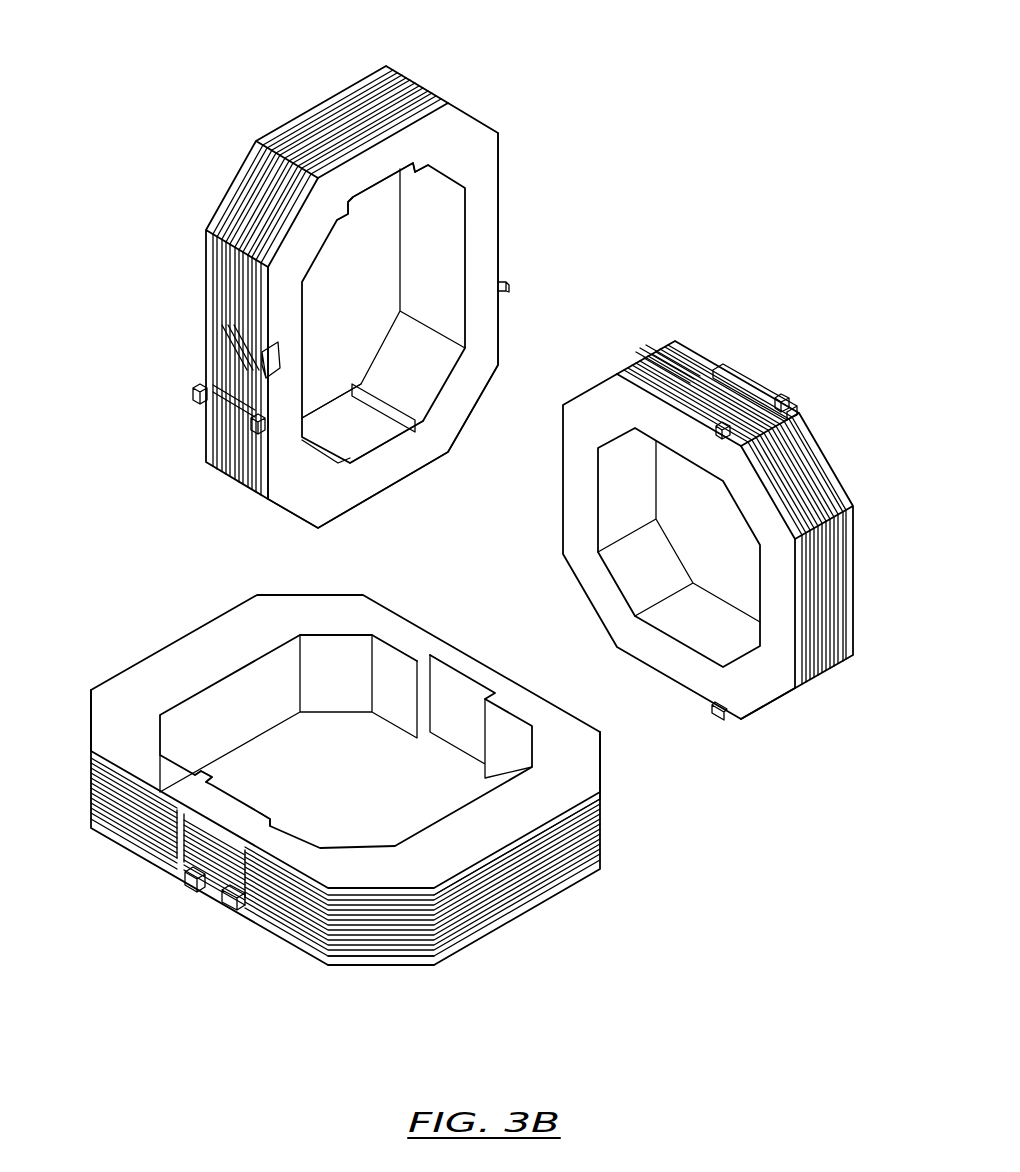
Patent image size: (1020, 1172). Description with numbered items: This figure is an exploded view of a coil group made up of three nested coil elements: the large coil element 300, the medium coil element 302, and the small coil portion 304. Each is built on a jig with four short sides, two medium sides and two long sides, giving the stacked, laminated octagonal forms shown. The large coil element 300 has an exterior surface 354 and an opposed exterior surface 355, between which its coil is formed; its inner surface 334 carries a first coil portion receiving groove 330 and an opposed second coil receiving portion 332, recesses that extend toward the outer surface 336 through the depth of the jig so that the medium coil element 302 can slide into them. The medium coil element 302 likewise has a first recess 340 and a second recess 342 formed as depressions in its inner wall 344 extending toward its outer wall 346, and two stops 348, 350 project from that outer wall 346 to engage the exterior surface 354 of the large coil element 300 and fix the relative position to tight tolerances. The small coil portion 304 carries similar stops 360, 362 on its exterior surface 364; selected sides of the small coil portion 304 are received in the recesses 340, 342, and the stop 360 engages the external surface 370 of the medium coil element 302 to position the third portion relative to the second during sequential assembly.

The large coil element 300 is at (349, 803).
The medium coil element 302 is at (363, 281).
The small coil portion 304 is at (745, 559).
The first coil portion receiving groove 330 is at (462, 730).
The second coil receiving portion 332 is at (240, 808).
The inner surface 334 is at (395, 703).
The outer surface 336 is at (118, 763).
The first recess 340 is at (387, 182).
The second recess 342 is at (377, 435).
The inner wall 344 is at (398, 405).
The outer wall 346 is at (322, 102).
The stop 348 is at (510, 287).
The stop 350 is at (196, 394).
The exterior surface 354 is at (585, 773).
The opposed exterior surface 355 is at (375, 967).
The stop 360 is at (782, 393).
The stop 362 is at (720, 722).
The exterior surface 364 is at (797, 405).
The external surface 370 is at (487, 327).